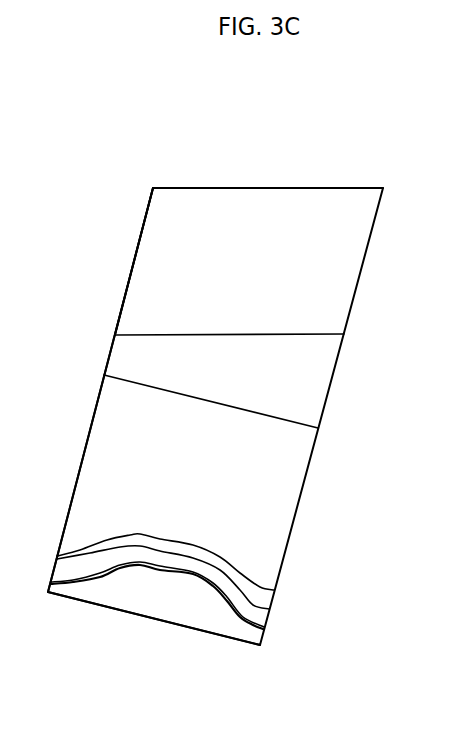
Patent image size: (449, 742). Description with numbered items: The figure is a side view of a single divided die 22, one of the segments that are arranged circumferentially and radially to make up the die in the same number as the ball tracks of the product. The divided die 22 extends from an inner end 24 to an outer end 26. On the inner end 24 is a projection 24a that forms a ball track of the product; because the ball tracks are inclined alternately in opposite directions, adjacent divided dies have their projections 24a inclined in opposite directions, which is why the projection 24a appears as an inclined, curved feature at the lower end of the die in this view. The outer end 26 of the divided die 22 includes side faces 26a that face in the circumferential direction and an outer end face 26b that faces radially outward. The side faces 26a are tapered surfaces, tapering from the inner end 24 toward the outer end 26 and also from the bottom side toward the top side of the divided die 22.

The outer end 26 is at (158, 157).
The side faces 26a is at (150, 253).
The outer end face 26b is at (262, 188).
The divided die 22 is at (80, 463).
The inner end 24 is at (88, 628).
The projection 24a is at (163, 605).